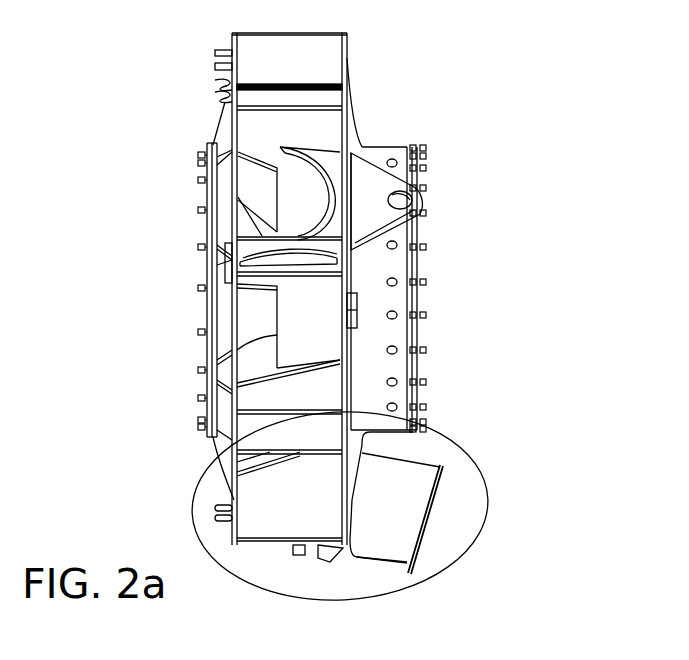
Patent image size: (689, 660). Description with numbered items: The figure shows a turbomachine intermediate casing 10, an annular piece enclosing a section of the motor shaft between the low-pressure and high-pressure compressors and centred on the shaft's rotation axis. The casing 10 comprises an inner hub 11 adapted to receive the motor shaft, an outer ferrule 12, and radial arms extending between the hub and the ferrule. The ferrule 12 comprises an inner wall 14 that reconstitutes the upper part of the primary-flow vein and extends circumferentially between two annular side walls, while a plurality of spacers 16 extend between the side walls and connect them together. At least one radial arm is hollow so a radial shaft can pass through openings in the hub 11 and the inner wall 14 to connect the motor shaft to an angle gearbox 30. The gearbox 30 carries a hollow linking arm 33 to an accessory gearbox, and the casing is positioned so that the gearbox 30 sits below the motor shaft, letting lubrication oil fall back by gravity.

The intermediate casing 10 is at (506, 242).
The inner hub 11 is at (397, 323).
The outer ferrule 12 is at (349, 128).
The inner wall 14 is at (304, 308).
The spacers 16 is at (245, 254).
The angle gearbox 30 is at (250, 540).
The linking arm 33 is at (398, 523).